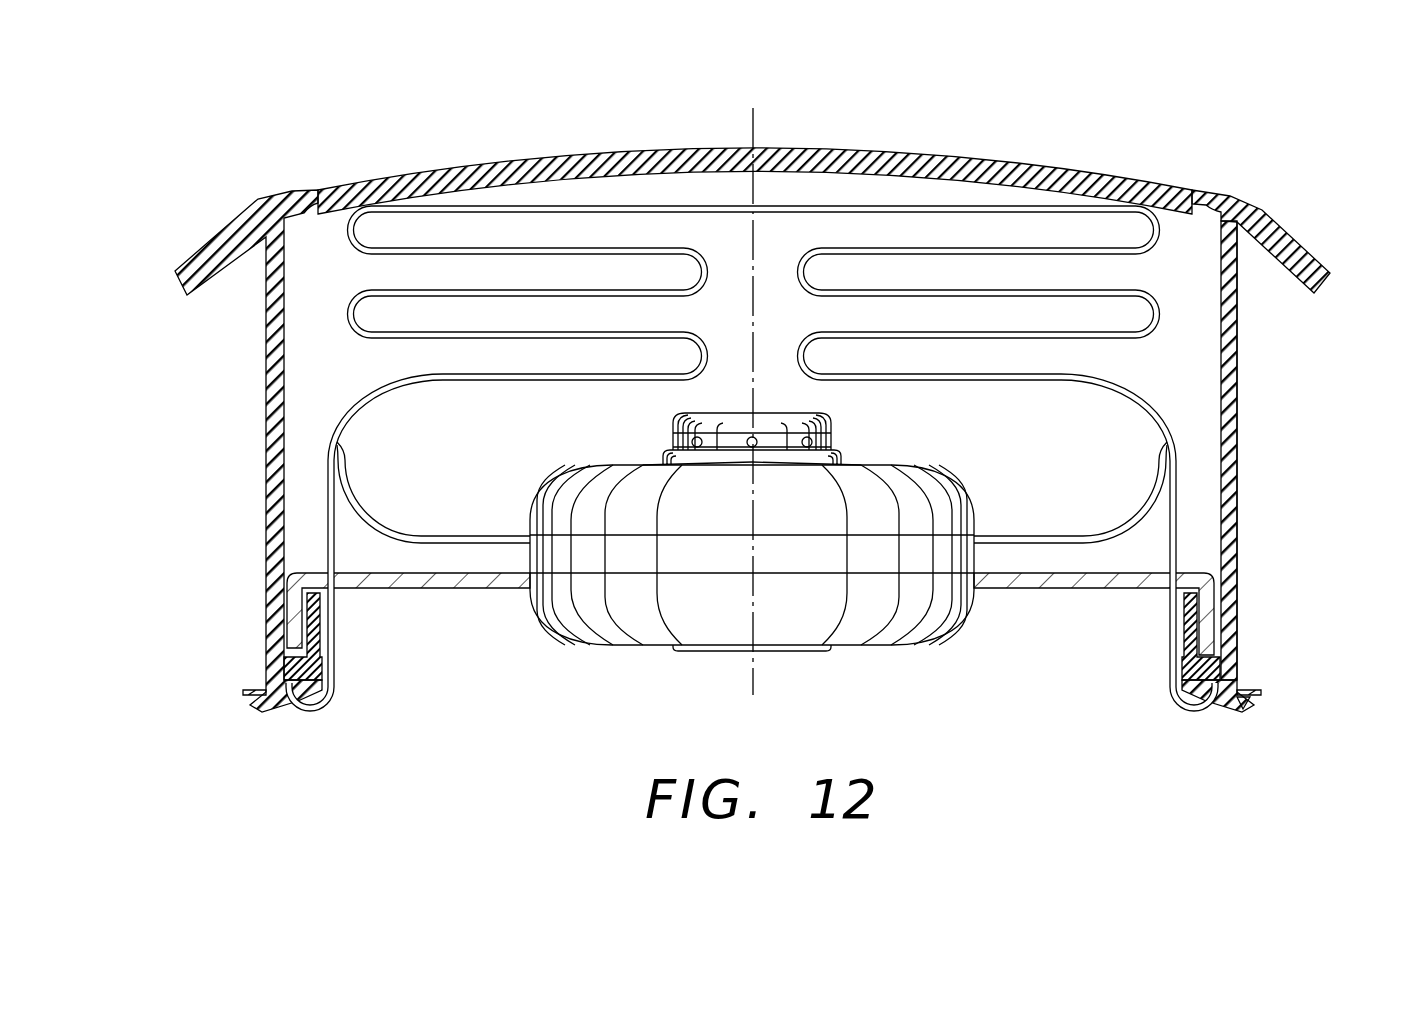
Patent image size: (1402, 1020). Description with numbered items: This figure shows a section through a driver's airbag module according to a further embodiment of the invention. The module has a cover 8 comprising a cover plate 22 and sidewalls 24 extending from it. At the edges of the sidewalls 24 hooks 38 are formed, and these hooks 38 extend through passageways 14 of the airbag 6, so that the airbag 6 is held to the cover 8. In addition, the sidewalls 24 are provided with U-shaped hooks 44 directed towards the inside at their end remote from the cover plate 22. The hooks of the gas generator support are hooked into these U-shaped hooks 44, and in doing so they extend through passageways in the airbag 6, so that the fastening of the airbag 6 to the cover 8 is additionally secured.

The cover plate 22 is at (667, 148).
The airbag 6 is at (962, 206).
The cover 8 is at (1262, 207).
The sidewalls 24 is at (266, 505).
The U-shaped hooks 44 is at (322, 610).
The hooks 38 is at (250, 693).
The passageways 14 is at (287, 702).